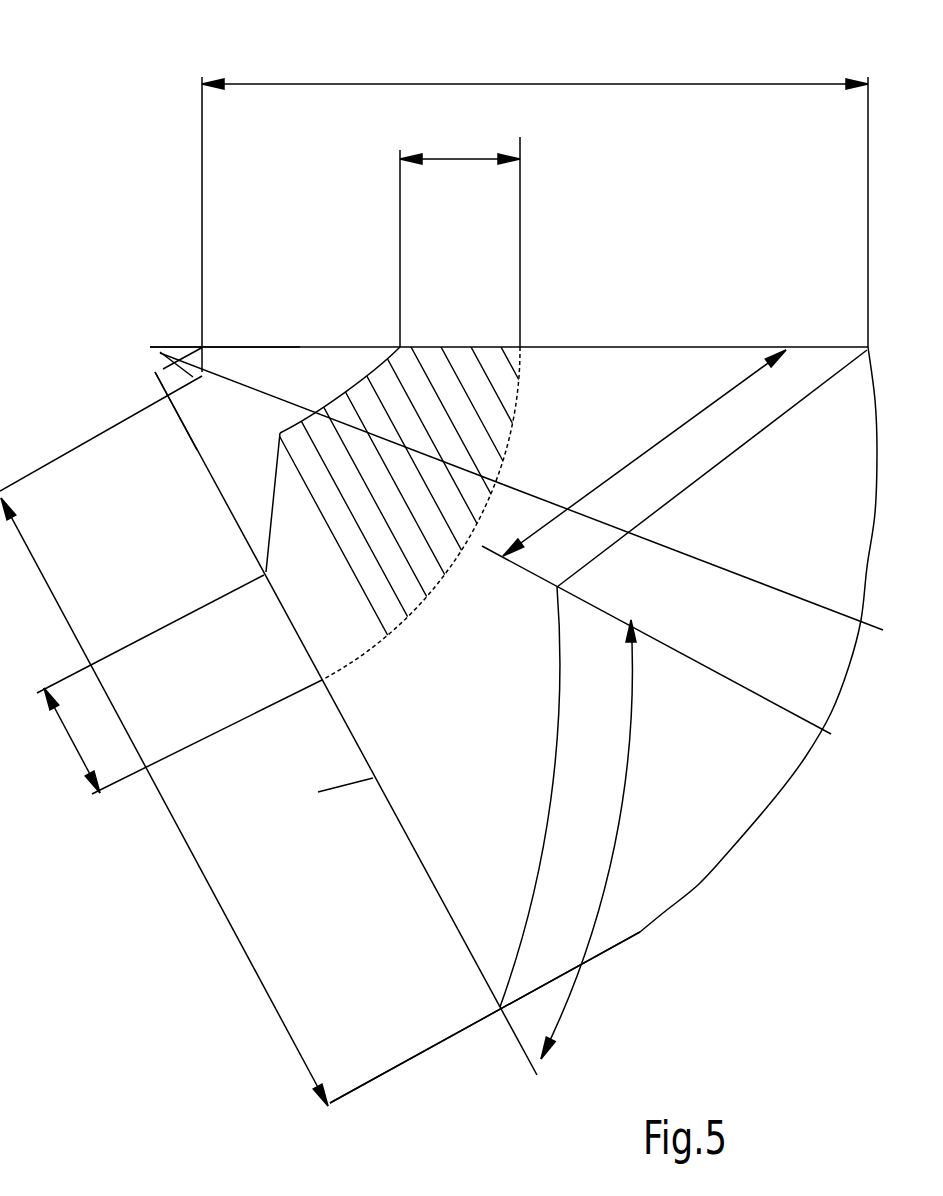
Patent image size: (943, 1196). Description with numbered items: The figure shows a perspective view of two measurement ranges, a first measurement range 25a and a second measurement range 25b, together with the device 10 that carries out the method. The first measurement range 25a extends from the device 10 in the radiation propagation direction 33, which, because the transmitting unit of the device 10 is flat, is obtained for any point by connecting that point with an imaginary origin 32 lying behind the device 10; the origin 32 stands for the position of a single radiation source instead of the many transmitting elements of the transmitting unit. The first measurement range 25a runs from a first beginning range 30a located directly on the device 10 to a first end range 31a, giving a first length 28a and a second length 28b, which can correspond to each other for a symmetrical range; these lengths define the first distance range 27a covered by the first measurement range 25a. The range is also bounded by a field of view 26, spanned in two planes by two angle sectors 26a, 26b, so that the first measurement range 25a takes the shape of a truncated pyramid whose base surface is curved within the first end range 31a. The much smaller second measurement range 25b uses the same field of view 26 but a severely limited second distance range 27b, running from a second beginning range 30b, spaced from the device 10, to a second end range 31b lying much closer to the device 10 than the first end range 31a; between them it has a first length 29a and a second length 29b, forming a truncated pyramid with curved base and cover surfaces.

The device 10 is at (188, 345).
The first measurement range 25a is at (357, 903).
The second measurement range 25b is at (482, 322).
The field of view 26 is at (783, 325).
The angle sector 26a is at (657, 467).
The angle sector 26b is at (624, 793).
The first distance range 27a is at (323, 850).
The second distance range 27b is at (262, 642).
The first length 28a is at (165, 812).
The second length 28b is at (578, 84).
The first length 29a is at (68, 745).
The second length 29b is at (458, 159).
The first beginning range 30a is at (153, 398).
The second beginning range 30b is at (247, 548).
The first end range 31a is at (497, 1025).
The second end range 31b is at (316, 684).
The origin 32 is at (127, 347).
The radiation propagation direction 33 is at (612, 347).